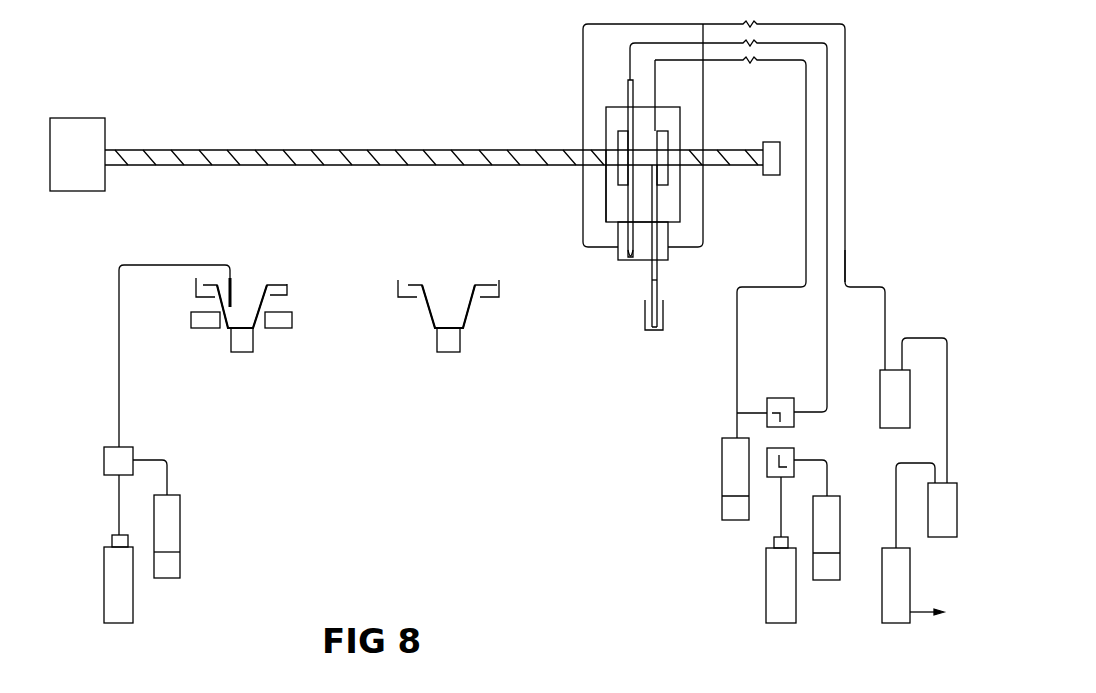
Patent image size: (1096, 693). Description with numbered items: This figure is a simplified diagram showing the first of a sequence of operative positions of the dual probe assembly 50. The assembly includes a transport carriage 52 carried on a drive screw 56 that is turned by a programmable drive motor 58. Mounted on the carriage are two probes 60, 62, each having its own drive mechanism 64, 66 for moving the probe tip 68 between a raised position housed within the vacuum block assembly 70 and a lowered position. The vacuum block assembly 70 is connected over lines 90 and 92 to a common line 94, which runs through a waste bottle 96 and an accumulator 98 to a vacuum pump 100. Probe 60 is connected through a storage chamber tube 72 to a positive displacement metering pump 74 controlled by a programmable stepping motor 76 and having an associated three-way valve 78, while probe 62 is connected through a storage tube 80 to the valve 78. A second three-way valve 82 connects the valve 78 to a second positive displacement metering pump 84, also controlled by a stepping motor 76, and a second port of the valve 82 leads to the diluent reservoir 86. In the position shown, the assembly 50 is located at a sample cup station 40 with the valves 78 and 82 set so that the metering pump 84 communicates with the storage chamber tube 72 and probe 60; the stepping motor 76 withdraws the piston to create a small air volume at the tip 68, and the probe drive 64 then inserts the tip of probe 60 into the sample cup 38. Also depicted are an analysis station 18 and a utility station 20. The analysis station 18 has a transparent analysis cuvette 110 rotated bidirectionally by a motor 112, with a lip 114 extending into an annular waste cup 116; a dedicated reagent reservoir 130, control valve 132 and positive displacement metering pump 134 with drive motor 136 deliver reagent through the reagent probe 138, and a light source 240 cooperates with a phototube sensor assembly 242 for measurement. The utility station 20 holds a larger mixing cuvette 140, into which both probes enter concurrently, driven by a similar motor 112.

The analysis station 18 is at (252, 261).
The utility station 20 is at (450, 270).
The sample cup 38 is at (645, 332).
The sample cup station 40 is at (674, 283).
The dual probe assembly 50 is at (572, 138).
The transport carriage 52 is at (605, 187).
The drive screw 56 is at (153, 150).
The drive motor 58 is at (72, 118).
The probe 60 is at (660, 203).
The probe 62 is at (627, 203).
The drive mechanism 64 is at (668, 132).
The drive mechanism 66 is at (618, 132).
The probe tip 68 is at (631, 260).
The vacuum block assembly 70 is at (617, 237).
The storage chamber tube 72 is at (736, 333).
The positive displacement metering pump 74 is at (721, 463).
The stepping motor 76 is at (721, 508).
The three-way valve 78 is at (778, 398).
The storage tube 80 is at (828, 330).
The second three-way valve 82 is at (795, 452).
The second positive displacement metering pump 84 is at (840, 532).
The diluent reservoir 86 is at (767, 595).
The line 90 is at (582, 47).
The line 92 is at (703, 67).
The common line 94 is at (891, 310).
The waste bottle 96 is at (882, 393).
The accumulator 98 is at (945, 537).
The vacuum pump 100 is at (882, 597).
The analysis cuvette 110 is at (228, 328).
The motor 112 is at (243, 350).
The lip 114 is at (273, 285).
The waste cup 116 is at (287, 289).
The reagent reservoir 130 is at (104, 582).
The control valve 132 is at (104, 462).
The positive displacement metering pump 134 is at (181, 520).
The drive motor 136 is at (180, 565).
The reagent probe 138 is at (228, 273).
The mixing cuvette 140 is at (428, 323).
The light source 240 is at (197, 327).
The phototube sensor assembly 242 is at (285, 323).